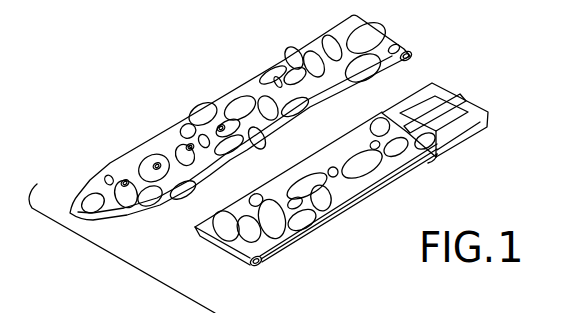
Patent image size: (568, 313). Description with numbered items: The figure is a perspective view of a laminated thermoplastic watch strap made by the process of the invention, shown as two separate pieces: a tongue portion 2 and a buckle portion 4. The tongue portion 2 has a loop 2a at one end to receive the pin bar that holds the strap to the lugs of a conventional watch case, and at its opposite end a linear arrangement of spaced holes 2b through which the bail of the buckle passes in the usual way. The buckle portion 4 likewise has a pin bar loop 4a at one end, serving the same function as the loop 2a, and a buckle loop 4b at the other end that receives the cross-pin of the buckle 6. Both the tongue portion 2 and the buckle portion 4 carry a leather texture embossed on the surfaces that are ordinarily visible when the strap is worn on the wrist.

The tongue portion 2 is at (188, 103).
The loop 2a is at (410, 58).
The spaced holes 2b is at (190, 146).
The buckle portion 4 is at (372, 212).
The pin bar loop 4a is at (264, 261).
The buckle loop 4b is at (430, 163).
The buckle 6 is at (497, 105).